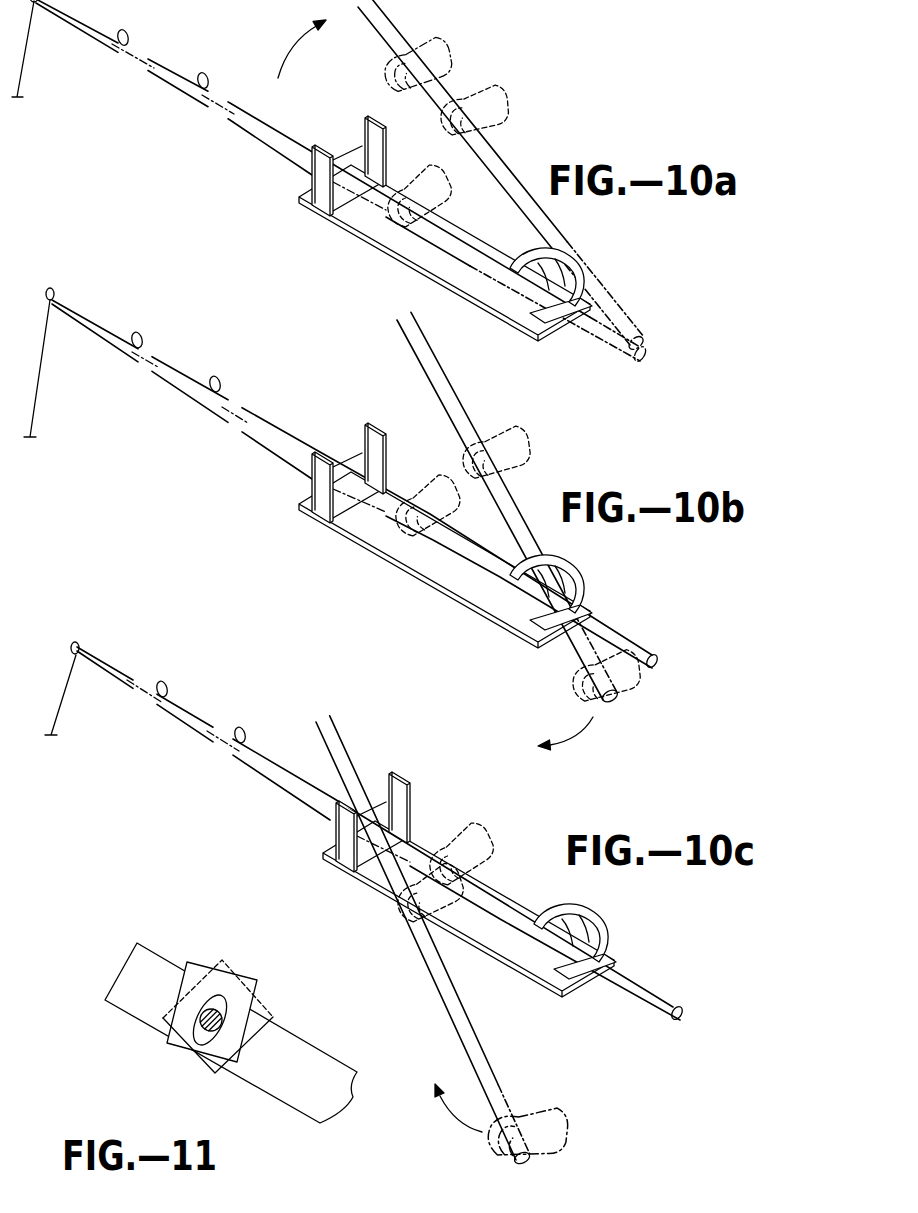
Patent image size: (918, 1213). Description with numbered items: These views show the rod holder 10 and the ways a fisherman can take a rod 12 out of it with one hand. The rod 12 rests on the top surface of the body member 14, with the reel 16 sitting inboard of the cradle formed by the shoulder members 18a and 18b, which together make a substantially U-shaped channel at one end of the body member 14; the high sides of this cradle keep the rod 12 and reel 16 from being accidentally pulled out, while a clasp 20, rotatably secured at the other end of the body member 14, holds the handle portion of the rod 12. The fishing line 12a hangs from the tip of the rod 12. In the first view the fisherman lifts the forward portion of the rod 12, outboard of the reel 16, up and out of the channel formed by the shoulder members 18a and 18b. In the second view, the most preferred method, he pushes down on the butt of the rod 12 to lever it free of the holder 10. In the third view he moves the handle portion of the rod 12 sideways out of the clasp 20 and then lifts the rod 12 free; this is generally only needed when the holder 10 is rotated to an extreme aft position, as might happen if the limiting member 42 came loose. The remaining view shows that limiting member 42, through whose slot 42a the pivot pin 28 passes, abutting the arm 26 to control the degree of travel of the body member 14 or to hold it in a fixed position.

In FIG. 10A, the rod holder 10 is at (421, 208).
In FIG. 10B, the rod holder 10 is at (416, 458).
In FIG. 10C, the rod holder 10 is at (455, 802).
In FIG. 10A, the rod 12 is at (158, 66).
In FIG. 10B, the rod 12 is at (112, 333).
In FIG. 10C, the rod 12 is at (191, 715).
In FIG. 10A, the fishing line 12a is at (22, 75).
In FIG. 10B, the fishing line 12a is at (34, 402).
In FIG. 10C, the fishing line 12a is at (60, 710).
In FIG. 10A, the body member 14 is at (482, 288).
In FIG. 10B, the body member 14 is at (476, 590).
In FIG. 10C, the body member 14 is at (503, 945).
In FIG. 10A, the reel 16 is at (506, 108).
In FIG. 10B, the reel 16 is at (534, 446).
In FIG. 10C, the reel 16 is at (452, 900).
In FIG. 10A, the shoulder member 18a is at (302, 168).
In FIG. 10B, the shoulder member 18a is at (312, 482).
In FIG. 10C, the shoulder member 18a is at (337, 836).
In FIG. 10A, the shoulder member 18b is at (375, 115).
In FIG. 10B, the shoulder member 18b is at (385, 452).
In FIG. 10C, the shoulder member 18b is at (400, 775).
In FIG. 10A, the clasp 20 is at (550, 256).
In FIG. 10B, the clasp 20 is at (560, 582).
In FIG. 10C, the clasp 20 is at (572, 907).
In FIG. 11, the arm 26 is at (133, 1000).
In FIG. 11, the pivot pin 28 is at (207, 1063).
In FIG. 11, the limiting member 42 is at (202, 962).
In FIG. 11, the slot 42a is at (228, 1008).